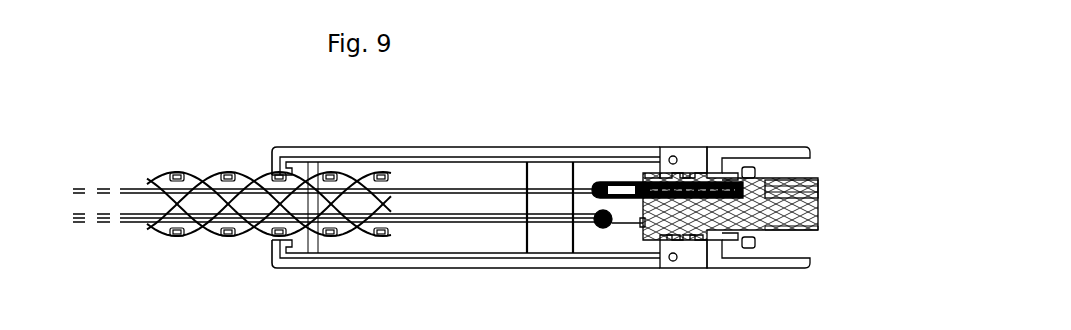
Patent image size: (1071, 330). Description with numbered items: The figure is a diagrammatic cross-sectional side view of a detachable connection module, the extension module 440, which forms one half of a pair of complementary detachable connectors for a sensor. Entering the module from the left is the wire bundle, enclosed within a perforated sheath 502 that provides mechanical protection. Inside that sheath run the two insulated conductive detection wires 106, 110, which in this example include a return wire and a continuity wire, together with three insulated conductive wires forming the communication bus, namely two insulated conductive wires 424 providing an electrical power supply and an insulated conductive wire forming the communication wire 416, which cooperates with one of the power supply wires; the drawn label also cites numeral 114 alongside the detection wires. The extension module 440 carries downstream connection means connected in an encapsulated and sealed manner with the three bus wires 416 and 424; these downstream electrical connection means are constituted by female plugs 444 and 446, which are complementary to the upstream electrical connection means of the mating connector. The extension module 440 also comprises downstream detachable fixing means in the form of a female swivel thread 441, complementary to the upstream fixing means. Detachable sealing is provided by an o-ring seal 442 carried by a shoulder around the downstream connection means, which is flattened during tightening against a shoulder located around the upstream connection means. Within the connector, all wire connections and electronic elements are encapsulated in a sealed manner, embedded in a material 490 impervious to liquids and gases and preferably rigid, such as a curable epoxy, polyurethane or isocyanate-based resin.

The insulated conductive detection wire 106 is at (391, 145).
The insulated conductive detection wire 110 is at (391, 145).
The guidewire lumen tube 114 is at (134, 189).
The communication wire 416 is at (349, 252).
The electrical power supply conductive wires 424 is at (134, 223).
The embedding material 490 is at (447, 176).
The perforated sheath 502 is at (219, 172).
The extension module 440 is at (693, 160).
The o-ring seal 442 is at (757, 170).
The female plug 446 is at (817, 193).
The female plug 444 is at (823, 215).
The female swivel thread 441 is at (797, 235).